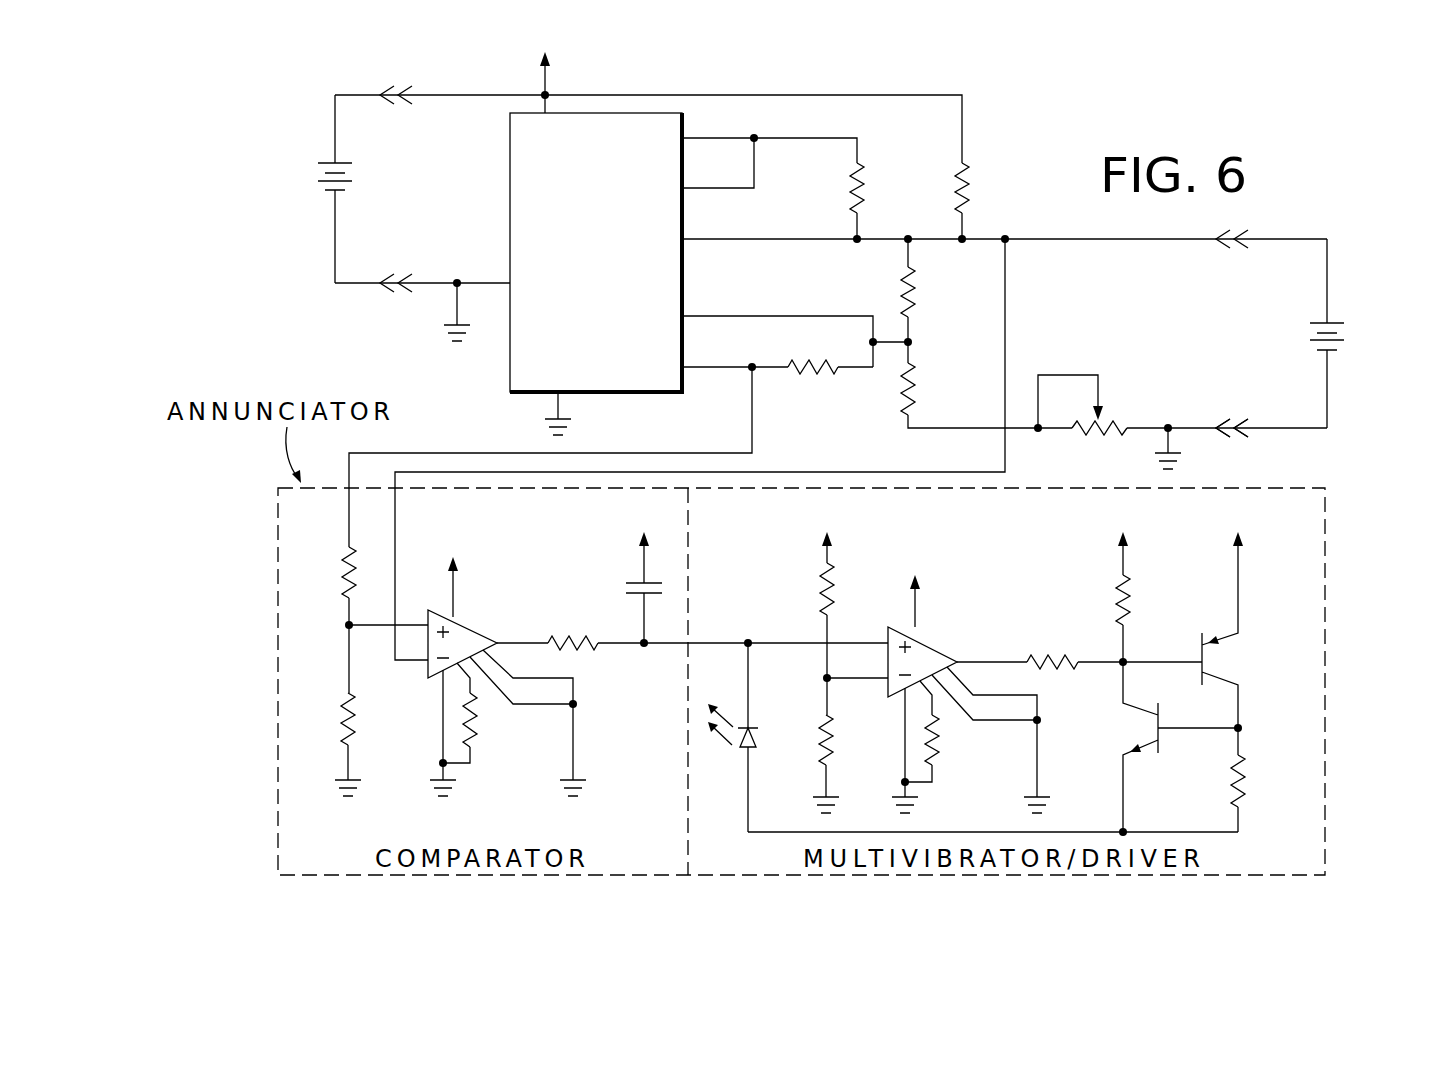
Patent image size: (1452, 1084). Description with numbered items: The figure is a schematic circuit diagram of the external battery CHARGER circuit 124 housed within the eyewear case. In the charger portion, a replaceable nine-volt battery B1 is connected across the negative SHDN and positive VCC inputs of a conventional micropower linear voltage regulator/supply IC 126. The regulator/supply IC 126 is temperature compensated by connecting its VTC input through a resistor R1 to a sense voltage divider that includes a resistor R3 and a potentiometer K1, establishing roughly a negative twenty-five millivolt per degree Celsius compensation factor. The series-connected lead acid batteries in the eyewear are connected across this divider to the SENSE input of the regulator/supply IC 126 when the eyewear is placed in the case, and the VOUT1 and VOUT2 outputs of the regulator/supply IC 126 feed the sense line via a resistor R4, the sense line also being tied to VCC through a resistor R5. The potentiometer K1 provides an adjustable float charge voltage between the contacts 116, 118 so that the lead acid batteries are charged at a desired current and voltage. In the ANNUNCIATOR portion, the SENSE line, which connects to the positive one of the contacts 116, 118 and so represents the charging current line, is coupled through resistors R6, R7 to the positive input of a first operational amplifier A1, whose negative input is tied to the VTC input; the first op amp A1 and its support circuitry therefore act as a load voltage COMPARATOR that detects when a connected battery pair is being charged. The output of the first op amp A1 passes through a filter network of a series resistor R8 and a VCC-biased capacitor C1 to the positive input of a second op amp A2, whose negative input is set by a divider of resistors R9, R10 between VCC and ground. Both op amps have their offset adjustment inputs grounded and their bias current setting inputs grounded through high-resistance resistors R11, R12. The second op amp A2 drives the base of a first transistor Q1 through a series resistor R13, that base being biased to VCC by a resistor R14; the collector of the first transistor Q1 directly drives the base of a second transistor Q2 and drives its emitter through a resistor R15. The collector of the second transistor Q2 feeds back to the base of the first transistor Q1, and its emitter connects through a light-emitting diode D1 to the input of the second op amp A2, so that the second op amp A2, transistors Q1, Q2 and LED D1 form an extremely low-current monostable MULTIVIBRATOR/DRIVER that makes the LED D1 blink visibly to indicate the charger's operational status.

The external battery CHARGER circuit 124 is at (1075, 80).
The voltage regulator/supply IC 126 is at (510, 212).
The contact 116 is at (1236, 250).
The contact 118 is at (1227, 413).
The replaceable 9 V battery B1 is at (316, 189).
The resistor R1 is at (778, 352).
The resistor R3 is at (986, 333).
The resistor R4 is at (878, 201).
The resistor R5 is at (982, 201).
The resistor R6 is at (327, 586).
The resistor R7 is at (329, 710).
The series resistor R8 is at (692, 626).
The resistor R9 is at (834, 585).
The resistor R10 is at (851, 745).
The high-resistance resistor R11 is at (487, 713).
The high-resistance resistor R12 is at (949, 731).
The series resistor R13 is at (1079, 646).
The resistor R14 is at (1137, 577).
The resistor R15 is at (1265, 780).
The potentiometer K1 is at (1180, 422).
The VCC-biased capacitor C1 is at (628, 568).
The light-emitting diode D1 is at (753, 737).
The first operational amplifier A1 is at (502, 657).
The second operational amplifier A2 is at (965, 672).
The first transistor Q1 is at (1231, 610).
The second transistor Q2 is at (1166, 747).